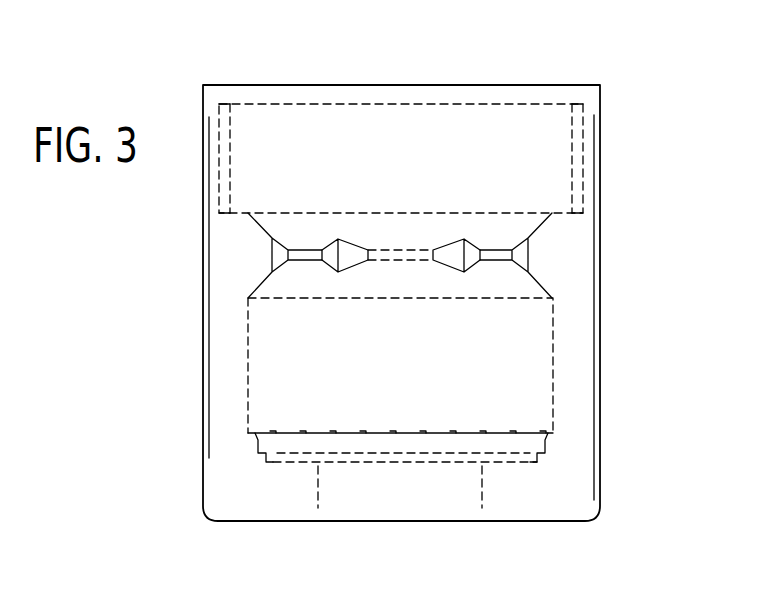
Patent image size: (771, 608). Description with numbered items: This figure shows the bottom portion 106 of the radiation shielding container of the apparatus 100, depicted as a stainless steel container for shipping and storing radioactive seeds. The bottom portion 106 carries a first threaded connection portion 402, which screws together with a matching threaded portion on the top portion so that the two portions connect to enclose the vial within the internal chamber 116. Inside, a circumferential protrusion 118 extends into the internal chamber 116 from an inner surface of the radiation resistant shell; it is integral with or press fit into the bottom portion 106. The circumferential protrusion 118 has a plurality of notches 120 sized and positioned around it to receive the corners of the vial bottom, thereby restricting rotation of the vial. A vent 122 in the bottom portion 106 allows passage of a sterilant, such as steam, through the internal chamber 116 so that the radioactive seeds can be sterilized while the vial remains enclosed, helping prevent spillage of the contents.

The apparatus 100 is at (212, 46).
The bottom portion 106 is at (670, 374).
The internal chamber 116 is at (312, 397).
The circumferential protrusion 118 is at (266, 254).
The notches 120 is at (355, 262).
The vent 122 is at (440, 537).
The first threaded connection portion 402 is at (236, 150).